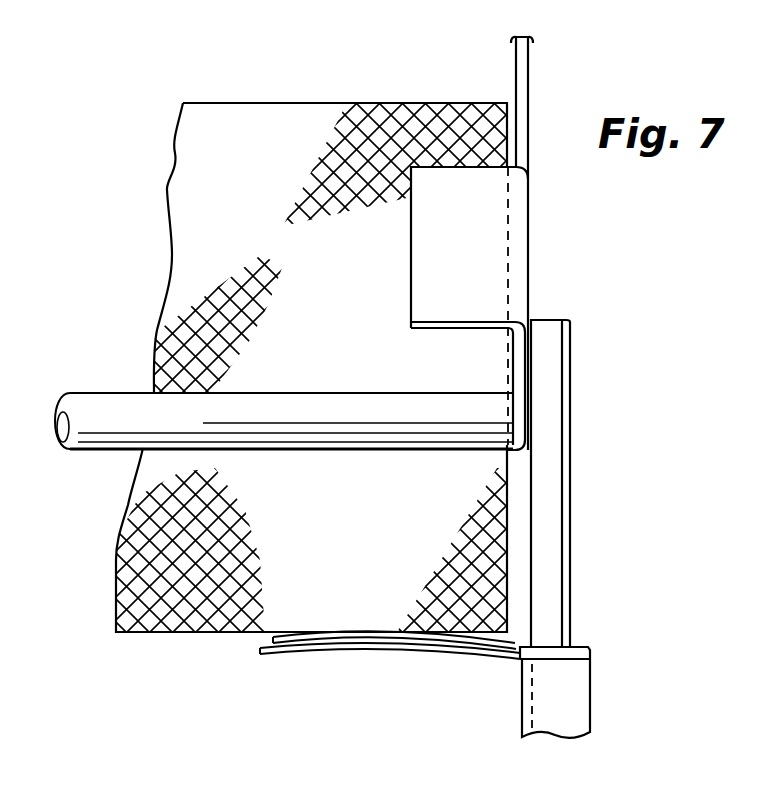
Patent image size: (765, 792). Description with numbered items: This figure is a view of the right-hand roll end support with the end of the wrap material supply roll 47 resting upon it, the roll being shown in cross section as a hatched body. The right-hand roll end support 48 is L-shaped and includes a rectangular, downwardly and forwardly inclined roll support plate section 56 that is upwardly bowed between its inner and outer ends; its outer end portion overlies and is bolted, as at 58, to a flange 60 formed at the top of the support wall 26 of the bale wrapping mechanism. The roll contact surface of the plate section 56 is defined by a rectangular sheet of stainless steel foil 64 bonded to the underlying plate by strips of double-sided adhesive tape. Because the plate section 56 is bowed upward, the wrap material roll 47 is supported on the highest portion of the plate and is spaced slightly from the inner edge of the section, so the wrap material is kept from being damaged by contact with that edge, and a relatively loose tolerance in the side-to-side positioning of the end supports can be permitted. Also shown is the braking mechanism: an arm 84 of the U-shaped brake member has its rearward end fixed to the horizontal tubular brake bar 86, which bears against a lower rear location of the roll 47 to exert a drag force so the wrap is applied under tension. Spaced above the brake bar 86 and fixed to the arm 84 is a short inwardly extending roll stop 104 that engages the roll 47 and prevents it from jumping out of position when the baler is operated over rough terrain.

The support wall 26 is at (520, 716).
The wrap material supply roll 47 is at (311, 367).
The right-hand roll end support 48 is at (552, 320).
The roll support plate section 56 is at (260, 652).
The bolt 58 is at (570, 446).
The flange 60 is at (592, 648).
The stainless steel foil 64 is at (282, 635).
The arm 84 is at (528, 66).
The tubular brake bar 86 is at (349, 392).
The roll stop 104 is at (469, 308).